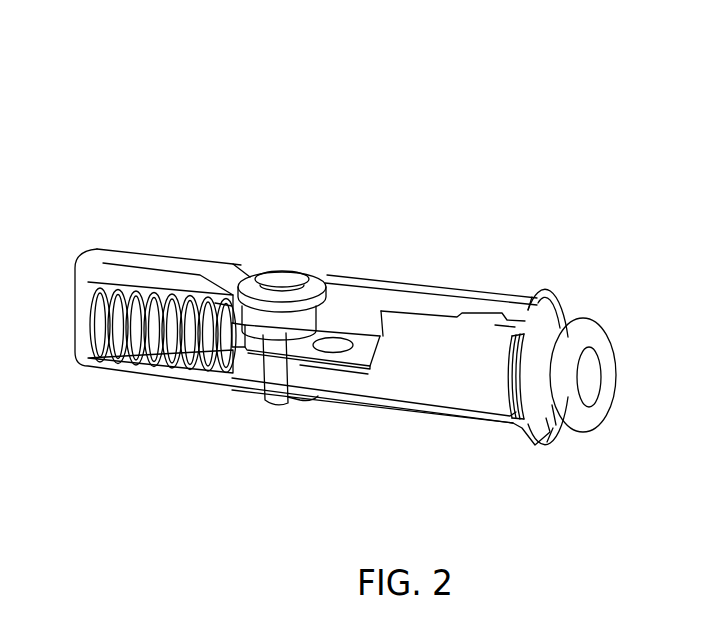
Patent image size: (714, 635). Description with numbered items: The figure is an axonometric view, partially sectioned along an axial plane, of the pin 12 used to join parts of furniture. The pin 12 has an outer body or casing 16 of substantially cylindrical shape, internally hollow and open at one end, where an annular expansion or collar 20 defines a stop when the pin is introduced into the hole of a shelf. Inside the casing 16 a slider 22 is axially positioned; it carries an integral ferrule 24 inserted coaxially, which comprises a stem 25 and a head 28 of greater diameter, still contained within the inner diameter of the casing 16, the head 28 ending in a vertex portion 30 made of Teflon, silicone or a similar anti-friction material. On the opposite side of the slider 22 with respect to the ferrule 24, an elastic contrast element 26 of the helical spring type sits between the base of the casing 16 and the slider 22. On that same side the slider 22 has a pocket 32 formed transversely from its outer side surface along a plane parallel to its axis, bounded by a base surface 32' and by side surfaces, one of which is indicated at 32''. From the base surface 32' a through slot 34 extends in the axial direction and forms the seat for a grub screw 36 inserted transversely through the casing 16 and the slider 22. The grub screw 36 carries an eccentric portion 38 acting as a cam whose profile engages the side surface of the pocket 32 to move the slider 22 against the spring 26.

The pin 12 is at (443, 170).
The outer body or casing 16 is at (213, 280).
The annular expansion or collar 20 is at (550, 290).
The slider 22 is at (441, 372).
The ferrule 24 is at (584, 424).
The stem 25 is at (571, 322).
The elastic contrast element 26 is at (143, 363).
The head 28 is at (570, 353).
The vertex portion 30 is at (585, 377).
The pocket 32 is at (337, 296).
The base surface 32' is at (346, 419).
The slider rear portion 32'' is at (225, 387).
The through slot 34 is at (315, 345).
The grub screw 36 is at (289, 258).
The eccentric portion 38 is at (338, 278).